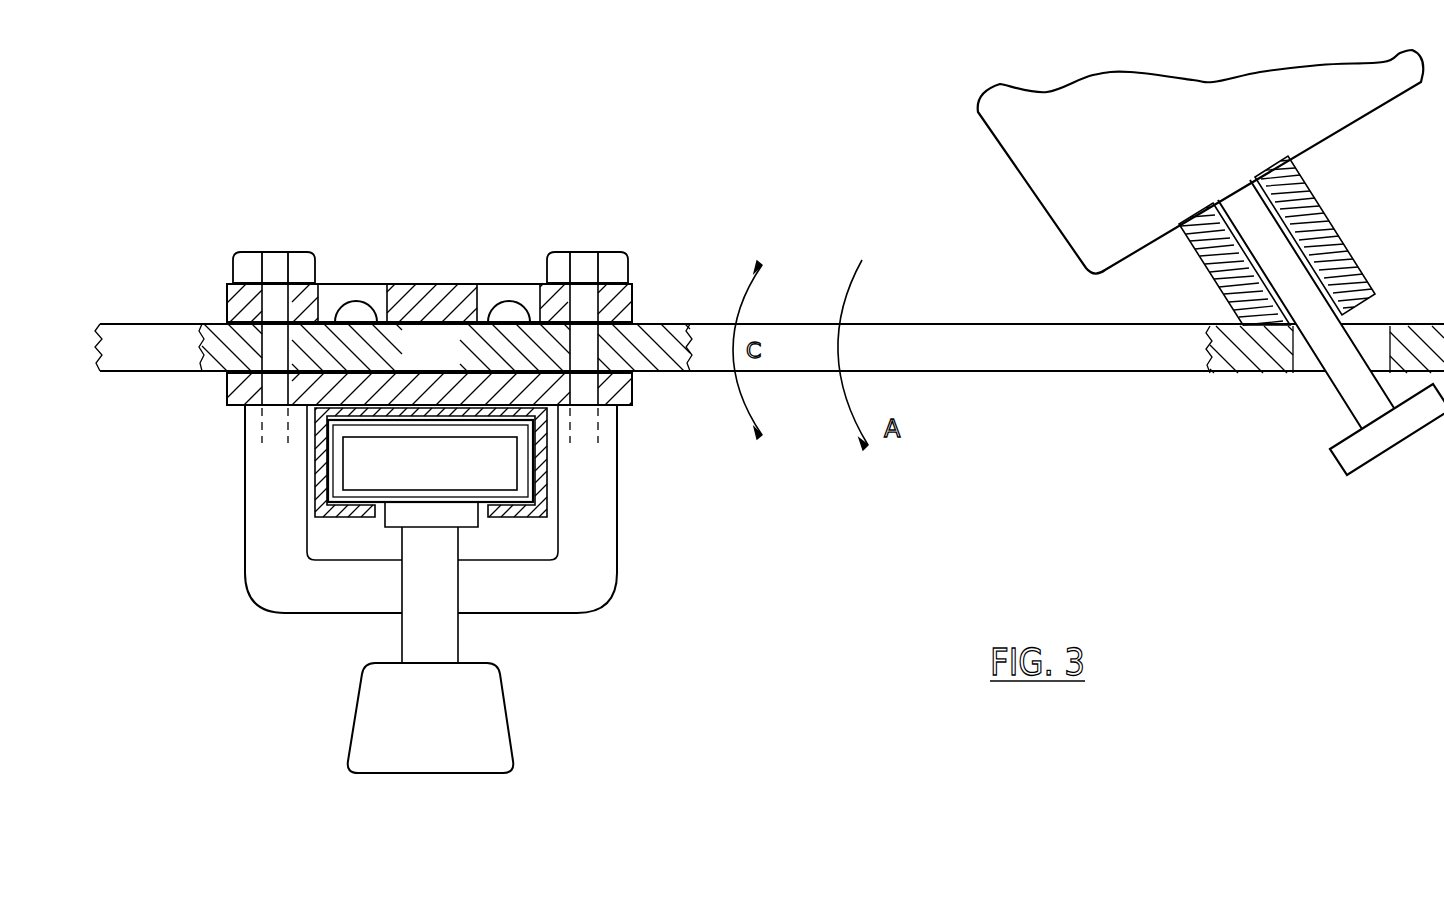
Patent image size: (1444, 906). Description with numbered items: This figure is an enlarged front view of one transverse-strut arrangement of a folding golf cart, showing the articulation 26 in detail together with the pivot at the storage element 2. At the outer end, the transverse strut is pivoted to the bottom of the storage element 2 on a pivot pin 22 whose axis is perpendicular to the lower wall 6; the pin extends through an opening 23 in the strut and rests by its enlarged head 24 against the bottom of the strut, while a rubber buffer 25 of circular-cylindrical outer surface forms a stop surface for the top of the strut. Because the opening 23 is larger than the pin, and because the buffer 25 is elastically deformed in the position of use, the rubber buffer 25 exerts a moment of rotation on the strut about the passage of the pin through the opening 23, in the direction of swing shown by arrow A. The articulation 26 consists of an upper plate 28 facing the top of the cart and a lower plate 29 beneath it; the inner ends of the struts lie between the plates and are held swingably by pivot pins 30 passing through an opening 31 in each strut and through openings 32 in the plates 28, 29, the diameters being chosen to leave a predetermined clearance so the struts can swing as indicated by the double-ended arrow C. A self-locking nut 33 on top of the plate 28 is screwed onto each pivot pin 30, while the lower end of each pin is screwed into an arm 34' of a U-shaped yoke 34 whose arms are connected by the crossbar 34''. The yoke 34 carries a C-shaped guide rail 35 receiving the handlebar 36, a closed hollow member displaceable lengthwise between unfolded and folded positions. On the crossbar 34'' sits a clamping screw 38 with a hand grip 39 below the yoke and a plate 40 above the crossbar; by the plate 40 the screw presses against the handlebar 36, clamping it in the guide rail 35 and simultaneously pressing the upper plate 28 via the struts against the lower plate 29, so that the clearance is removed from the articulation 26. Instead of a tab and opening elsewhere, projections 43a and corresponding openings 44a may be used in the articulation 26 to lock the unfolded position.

The storage element 2 is at (1003, 147).
The lower wall element 6 is at (1145, 250).
The pivot pin 22 is at (1280, 245).
The opening 23 is at (1313, 362).
The head 24 is at (1373, 443).
The rubber buffer 25 is at (1290, 187).
The articulation 26 is at (622, 615).
The upper plate 28 is at (613, 298).
The lower plate 29 is at (623, 405).
The pivot pin 30 is at (587, 352).
The opening 31 is at (632, 372).
The opening 32 is at (237, 407).
The self-locking nut 33 is at (605, 262).
The yoke 34 is at (418, 570).
The arm 34' is at (428, 489).
The crossbar 34'' is at (431, 617).
The guide rail 35 is at (350, 515).
The handlebar 36 is at (437, 477).
The clamping screw 38 is at (418, 643).
The hand grip 39 is at (385, 748).
The plate 40 is at (470, 517).
The projection 43a is at (360, 306).
The opening 44a is at (373, 292).